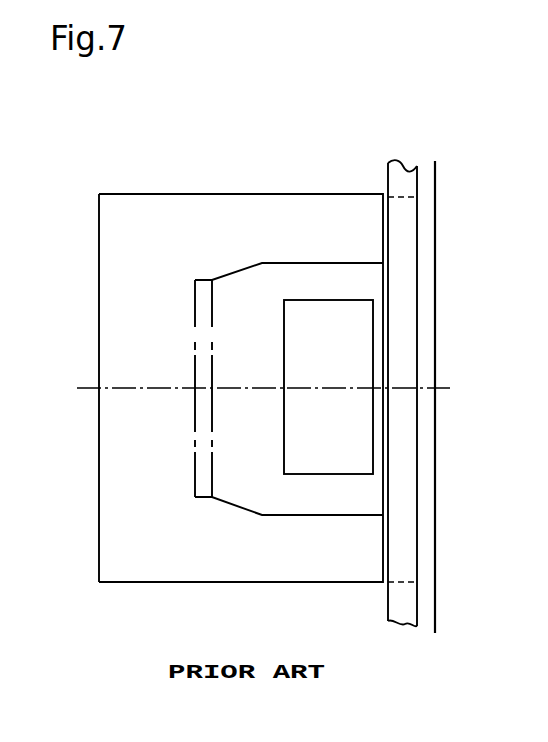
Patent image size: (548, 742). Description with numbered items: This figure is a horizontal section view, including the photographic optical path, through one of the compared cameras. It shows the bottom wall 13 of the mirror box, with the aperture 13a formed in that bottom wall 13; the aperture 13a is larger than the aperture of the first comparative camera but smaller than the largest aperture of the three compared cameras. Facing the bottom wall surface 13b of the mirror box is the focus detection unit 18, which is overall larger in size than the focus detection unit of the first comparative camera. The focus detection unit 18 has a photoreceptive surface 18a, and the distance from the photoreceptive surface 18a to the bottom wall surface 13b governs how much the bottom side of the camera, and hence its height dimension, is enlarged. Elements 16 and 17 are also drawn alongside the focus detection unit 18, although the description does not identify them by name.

The bottom wall of the mirror box 13 is at (202, 195).
The aperture 13a is at (325, 300).
The bottom wall surface of the mirror box 13b is at (136, 232).
The plate 16 is at (402, 178).
The cover plate 17 is at (437, 186).
The focus detection unit 18 is at (240, 263).
The photoreceptive surface 18a is at (315, 452).